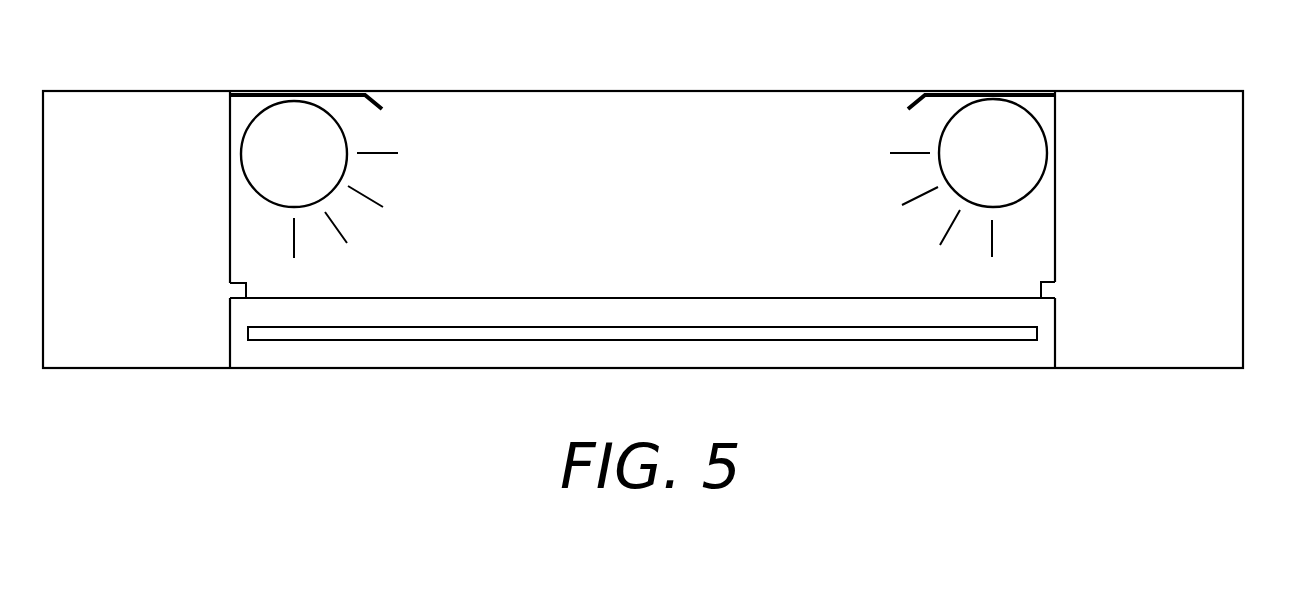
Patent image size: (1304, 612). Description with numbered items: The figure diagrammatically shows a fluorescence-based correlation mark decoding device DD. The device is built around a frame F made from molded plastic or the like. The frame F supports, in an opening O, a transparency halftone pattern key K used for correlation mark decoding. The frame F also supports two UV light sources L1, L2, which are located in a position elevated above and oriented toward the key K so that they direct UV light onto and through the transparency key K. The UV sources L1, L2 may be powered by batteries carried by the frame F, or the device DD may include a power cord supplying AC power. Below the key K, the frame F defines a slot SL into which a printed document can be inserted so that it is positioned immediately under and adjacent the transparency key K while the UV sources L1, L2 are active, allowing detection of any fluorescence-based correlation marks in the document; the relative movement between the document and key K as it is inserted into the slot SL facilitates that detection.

The fluorescence-based correlation mark decoding device DD is at (1153, 75).
The frame F is at (1243, 268).
The opening O is at (249, 291).
The transparency halftone pattern key K is at (729, 299).
The slot SL is at (685, 334).
The UV light source L1 is at (345, 133).
The UV light source L2 is at (942, 135).